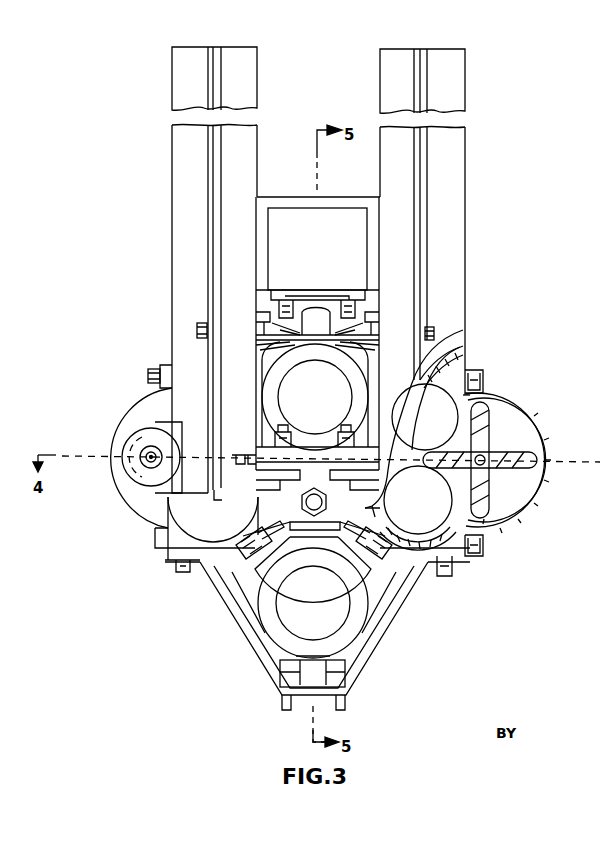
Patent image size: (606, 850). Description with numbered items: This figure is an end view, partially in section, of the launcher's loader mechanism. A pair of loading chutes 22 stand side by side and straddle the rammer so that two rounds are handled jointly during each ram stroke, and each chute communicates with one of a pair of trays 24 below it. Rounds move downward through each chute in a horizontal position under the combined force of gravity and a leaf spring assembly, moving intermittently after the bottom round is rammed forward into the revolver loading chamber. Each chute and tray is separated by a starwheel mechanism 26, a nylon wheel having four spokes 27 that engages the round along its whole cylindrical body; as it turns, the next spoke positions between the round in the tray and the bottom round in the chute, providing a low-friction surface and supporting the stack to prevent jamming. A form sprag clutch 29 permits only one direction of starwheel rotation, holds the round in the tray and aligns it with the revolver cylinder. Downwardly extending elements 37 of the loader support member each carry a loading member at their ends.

The loading chutes 22 is at (176, 200).
The trays 24 is at (462, 551).
The starwheel mechanism 26 is at (482, 430).
The spokes 27 is at (513, 470).
The form sprag clutch 29 is at (148, 472).
The downwardly extending elements 37 is at (240, 550).